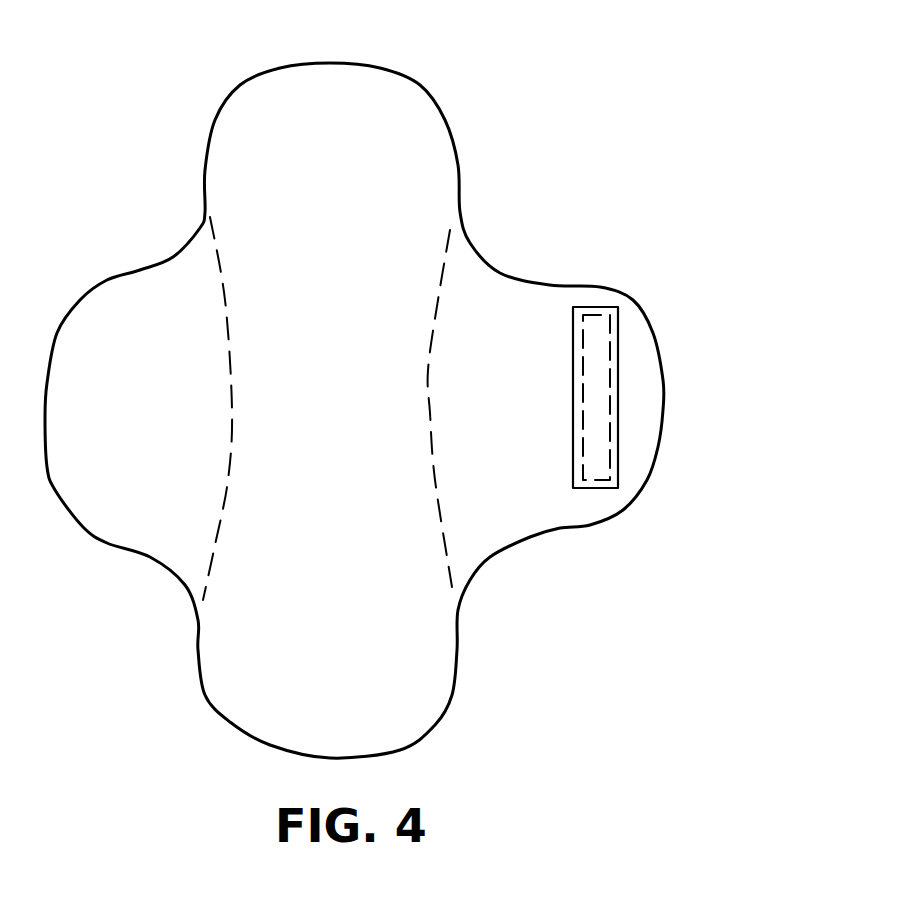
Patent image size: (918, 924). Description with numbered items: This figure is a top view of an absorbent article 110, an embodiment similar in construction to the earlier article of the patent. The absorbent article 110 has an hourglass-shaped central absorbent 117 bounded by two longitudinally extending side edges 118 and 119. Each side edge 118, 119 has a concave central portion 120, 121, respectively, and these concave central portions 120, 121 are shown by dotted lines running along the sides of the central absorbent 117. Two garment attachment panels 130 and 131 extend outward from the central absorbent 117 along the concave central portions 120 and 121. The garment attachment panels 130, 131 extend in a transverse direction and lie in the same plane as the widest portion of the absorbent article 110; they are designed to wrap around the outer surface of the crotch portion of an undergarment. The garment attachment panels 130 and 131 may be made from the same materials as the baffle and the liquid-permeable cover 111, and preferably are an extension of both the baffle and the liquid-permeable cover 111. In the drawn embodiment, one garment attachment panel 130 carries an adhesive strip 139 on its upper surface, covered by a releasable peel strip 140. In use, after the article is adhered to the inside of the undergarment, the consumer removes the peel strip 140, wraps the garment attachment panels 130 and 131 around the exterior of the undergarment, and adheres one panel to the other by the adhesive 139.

The absorbent article 110 is at (592, 80).
The liquid-permeable cover 111 is at (432, 147).
The central absorbent 117 is at (331, 247).
The side edge 118 is at (438, 300).
The side edge 119 is at (227, 288).
The concave central portion 120 is at (410, 412).
The concave central portion 121 is at (230, 437).
The garment attachment panel 130 is at (575, 515).
The garment attachment panel 131 is at (148, 543).
The adhesive strip 139 is at (612, 347).
The releasable peel strip 140 is at (620, 407).